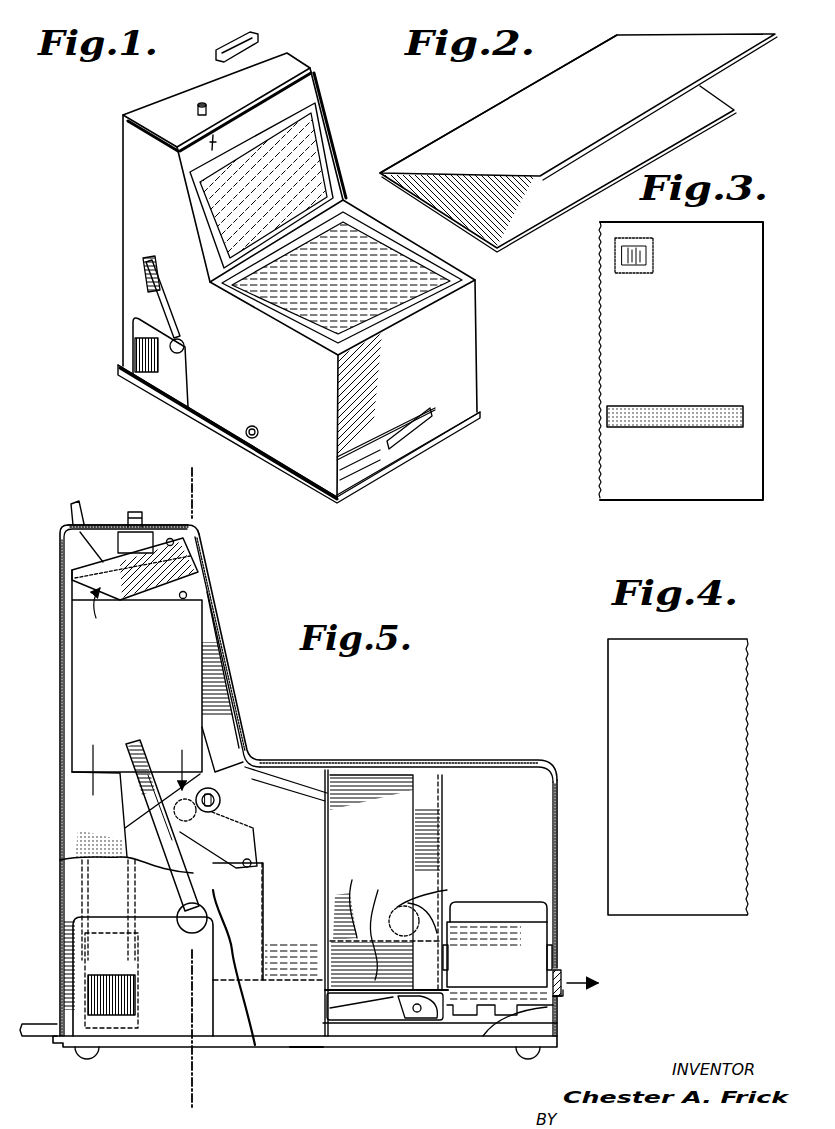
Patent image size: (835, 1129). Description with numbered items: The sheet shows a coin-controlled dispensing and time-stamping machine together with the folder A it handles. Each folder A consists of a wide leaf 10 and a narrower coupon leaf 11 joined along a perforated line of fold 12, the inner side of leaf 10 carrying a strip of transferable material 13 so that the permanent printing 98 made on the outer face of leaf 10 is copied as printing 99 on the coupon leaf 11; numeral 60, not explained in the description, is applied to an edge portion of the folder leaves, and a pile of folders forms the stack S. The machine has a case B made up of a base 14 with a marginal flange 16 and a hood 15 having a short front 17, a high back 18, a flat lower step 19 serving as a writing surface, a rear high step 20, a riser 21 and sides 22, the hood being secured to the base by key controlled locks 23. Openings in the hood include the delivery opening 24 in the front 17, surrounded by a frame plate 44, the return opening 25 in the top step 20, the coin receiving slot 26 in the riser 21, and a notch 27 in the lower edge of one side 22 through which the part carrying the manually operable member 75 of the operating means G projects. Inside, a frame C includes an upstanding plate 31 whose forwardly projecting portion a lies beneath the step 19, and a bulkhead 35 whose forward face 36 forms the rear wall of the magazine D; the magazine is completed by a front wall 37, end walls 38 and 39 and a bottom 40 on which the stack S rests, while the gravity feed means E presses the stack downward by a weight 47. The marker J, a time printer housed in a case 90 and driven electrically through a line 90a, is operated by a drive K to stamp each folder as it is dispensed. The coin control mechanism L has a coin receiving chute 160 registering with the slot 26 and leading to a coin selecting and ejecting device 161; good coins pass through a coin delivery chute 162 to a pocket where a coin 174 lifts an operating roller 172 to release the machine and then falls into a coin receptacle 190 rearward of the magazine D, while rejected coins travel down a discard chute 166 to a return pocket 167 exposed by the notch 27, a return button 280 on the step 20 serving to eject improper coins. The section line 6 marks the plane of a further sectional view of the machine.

In FIG. 2, the leaf 10 is at (722, 55).
In FIG. 3, the leaf 10 is at (745, 347).
In FIG. 2, the coupon leaf 11 is at (690, 126).
In FIG. 4, the coupon leaf 11 is at (727, 763).
In FIG. 2, the line of fold 12 is at (416, 153).
In FIG. 3, the transferable material 13 is at (655, 420).
In FIG. 1, the base 14 is at (427, 455).
In FIG. 5, the base 14 is at (297, 1052).
In FIG. 5, the hood 15 is at (407, 762).
In FIG. 1, the marginal flange 16 is at (303, 480).
In FIG. 5, the marginal flange 16 is at (558, 1038).
In FIG. 1, the front 17 is at (462, 373).
In FIG. 5, the front 17 is at (557, 855).
In FIG. 5, the back 18 is at (56, 710).
In FIG. 1, the lower step 19 is at (403, 262).
In FIG. 5, the lower step 19 is at (457, 763).
In FIG. 1, the rear high step 20 is at (193, 80).
In FIG. 5, the rear high step 20 is at (104, 525).
In FIG. 1, the riser 21 is at (312, 86).
In FIG. 5, the riser 21 is at (215, 610).
In FIG. 1, the sides 22 is at (220, 407).
In FIG. 1, the key controlled locks 23 is at (258, 430).
In FIG. 1, the delivery opening 24 is at (407, 433).
In FIG. 5, the delivery opening 24 is at (563, 976).
In FIG. 1, the return opening 25 is at (240, 42).
In FIG. 5, the return opening 25 is at (82, 500).
In FIG. 1, the coin receiving slot 26 is at (215, 139).
In FIG. 5, the coin receiving slot 26 is at (198, 547).
In FIG. 1, the notch 27 is at (183, 373).
In FIG. 5, the notch 27 is at (75, 955).
In FIG. 5, the plate 31 is at (290, 827).
In FIG. 5, the bulkhead 35 is at (337, 782).
In FIG. 5, the forward face of bulkhead 36 is at (330, 840).
In FIG. 5, the front wall 37 is at (442, 807).
In FIG. 5, the end wall 38 is at (430, 832).
In FIG. 5, the end wall 39 is at (386, 882).
In FIG. 5, the bottom 40 is at (382, 990).
In FIG. 1, the frame plate 44 is at (367, 465).
In FIG. 5, the frame plate 44 is at (563, 995).
In FIG. 5, the weight 47 is at (400, 902).
In FIG. 2, the envelope corner 60 is at (532, 230).
In FIG. 4, the envelope corner 60 is at (608, 727).
In FIG. 1, the manually operable member 75 is at (143, 268).
In FIG. 5, the manually operable member 75 is at (173, 882).
In FIG. 5, the case 90 is at (518, 905).
In FIG. 5, the line 90a is at (42, 1040).
In FIG. 2, the permanent printing 98 is at (613, 84).
In FIG. 2, the printing 99 is at (633, 140).
In FIG. 4, the printing 99 is at (672, 822).
In FIG. 5, the coin receiving chute 160 is at (185, 570).
In FIG. 5, the coin selecting and ejecting device 161 is at (137, 682).
In FIG. 5, the coin delivery chute 162 is at (193, 782).
In FIG. 5, the discard chute 166 is at (85, 827).
In FIG. 1, the return pocket 167 is at (138, 356).
In FIG. 5, the return pocket 167 is at (115, 1013).
In FIG. 5, the operating roller 172 is at (232, 822).
In FIG. 5, the coin 174 is at (198, 836).
In FIG. 5, the coin receptacle 190 is at (269, 954).
In FIG. 1, the return button 280 is at (206, 104).
In FIG. 5, the return button 280 is at (139, 510).
In FIG. 5, the section line 6 is at (196, 476).
In FIG. 2, the folder A is at (478, 135).
In FIG. 5, the folder A is at (348, 877).
In FIG. 1, the case B is at (482, 350).
In FIG. 5, the case B is at (247, 707).
In FIG. 5, the frame C is at (300, 783).
In FIG. 5, the magazine D is at (445, 787).
In FIG. 5, the feed means E is at (395, 897).
In FIG. 1, the operating means G is at (153, 258).
In FIG. 5, the operating means G is at (152, 740).
In FIG. 5, the marker J is at (487, 900).
In FIG. 5, the drive K is at (435, 1023).
In FIG. 5, the coin control mechanism L is at (95, 637).
In FIG. 5, the stack S is at (377, 887).
In FIG. 5, the forwardly projecting portion a is at (268, 800).